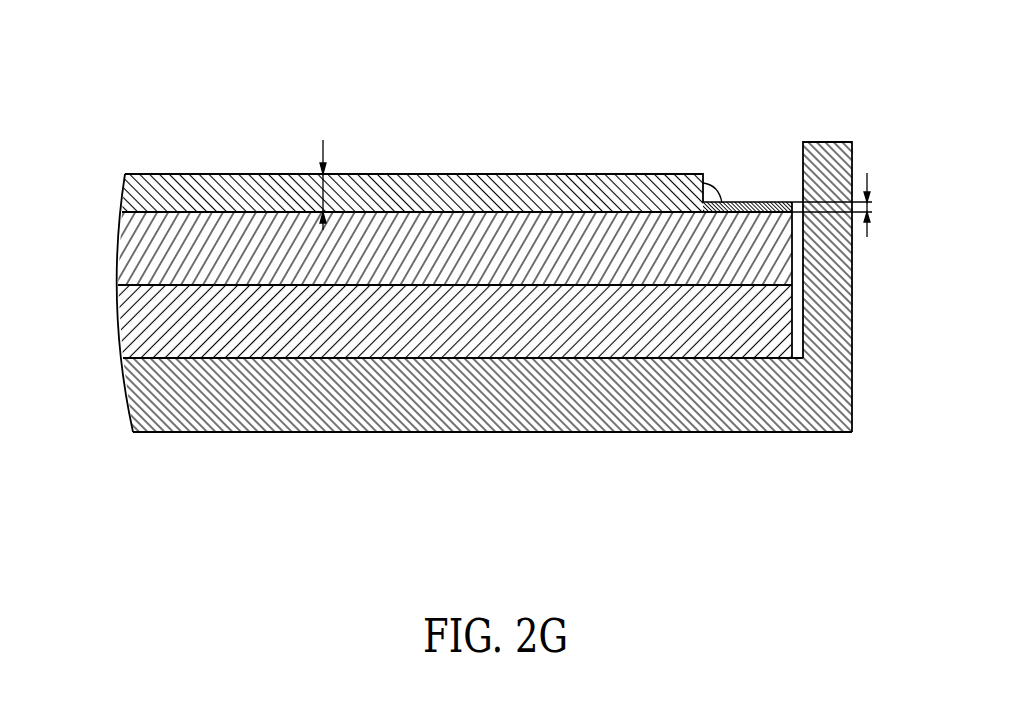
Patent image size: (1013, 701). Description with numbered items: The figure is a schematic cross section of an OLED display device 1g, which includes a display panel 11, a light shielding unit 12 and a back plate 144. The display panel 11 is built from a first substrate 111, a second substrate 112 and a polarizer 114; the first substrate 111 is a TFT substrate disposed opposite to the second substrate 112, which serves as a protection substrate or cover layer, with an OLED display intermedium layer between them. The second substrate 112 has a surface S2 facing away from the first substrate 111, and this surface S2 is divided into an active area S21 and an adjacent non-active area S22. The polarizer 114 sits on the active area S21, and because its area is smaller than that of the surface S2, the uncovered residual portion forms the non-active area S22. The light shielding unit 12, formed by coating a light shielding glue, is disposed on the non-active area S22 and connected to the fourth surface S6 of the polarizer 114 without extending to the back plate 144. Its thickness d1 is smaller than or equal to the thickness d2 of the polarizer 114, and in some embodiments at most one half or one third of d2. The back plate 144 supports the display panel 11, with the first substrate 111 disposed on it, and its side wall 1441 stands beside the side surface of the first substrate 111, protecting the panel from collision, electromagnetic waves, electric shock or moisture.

The display device 1g is at (248, 56).
The display panel 11 is at (52, 170).
The polarizer 114 is at (133, 197).
The second substrate 112 is at (132, 258).
The first substrate 111 is at (133, 332).
The light shielding unit 12 is at (763, 202).
The back plate 144 is at (143, 408).
The side wall 1441 is at (820, 142).
The surface S2 is at (748, 134).
The active area S21 is at (677, 212).
The non-active area S22 is at (722, 232).
The fourth surface S6 is at (723, 234).
The thickness of the light shielding unit d1 is at (881, 205).
The thickness of the polarizer d2 is at (308, 184).